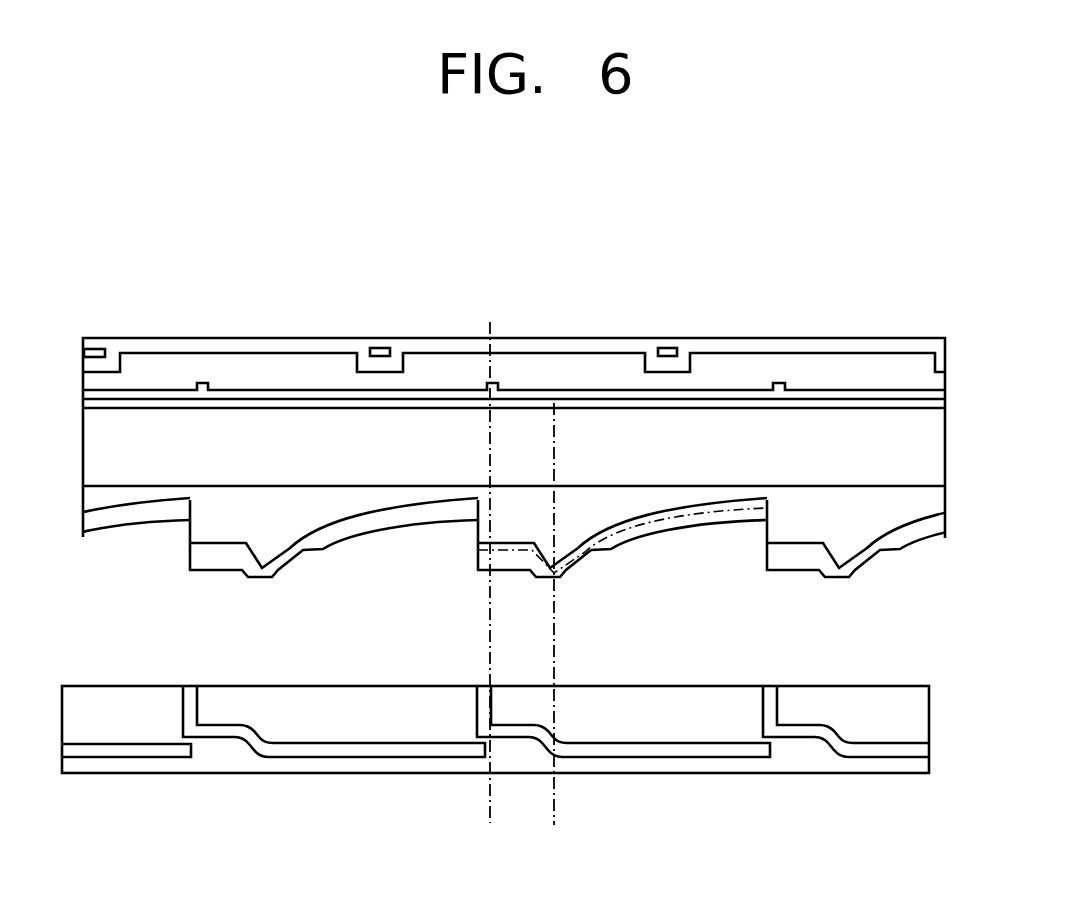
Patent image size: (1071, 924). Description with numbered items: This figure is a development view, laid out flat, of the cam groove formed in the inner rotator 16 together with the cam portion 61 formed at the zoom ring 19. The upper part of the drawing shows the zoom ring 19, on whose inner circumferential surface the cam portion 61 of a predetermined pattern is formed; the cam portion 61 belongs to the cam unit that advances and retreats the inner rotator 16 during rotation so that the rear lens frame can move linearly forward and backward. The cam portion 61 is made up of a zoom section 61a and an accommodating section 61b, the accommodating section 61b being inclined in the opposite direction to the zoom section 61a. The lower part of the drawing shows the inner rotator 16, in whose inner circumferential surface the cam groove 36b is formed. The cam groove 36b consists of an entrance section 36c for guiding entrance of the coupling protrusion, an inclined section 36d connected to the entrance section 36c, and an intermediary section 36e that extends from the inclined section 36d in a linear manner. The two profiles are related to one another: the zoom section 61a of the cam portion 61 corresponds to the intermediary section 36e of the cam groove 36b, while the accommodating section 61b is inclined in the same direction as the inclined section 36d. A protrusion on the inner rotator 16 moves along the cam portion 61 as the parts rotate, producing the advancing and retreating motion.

The zoom ring 19 is at (349, 318).
The cam portion 61 is at (527, 421).
The zoom section 61a is at (623, 523).
The accommodating section 61b is at (547, 545).
The inner rotator 16 is at (495, 735).
The cam groove 36b is at (296, 667).
The entrance section 36c is at (193, 715).
The inclined section 36d is at (245, 725).
The intermediary section 36e is at (376, 696).